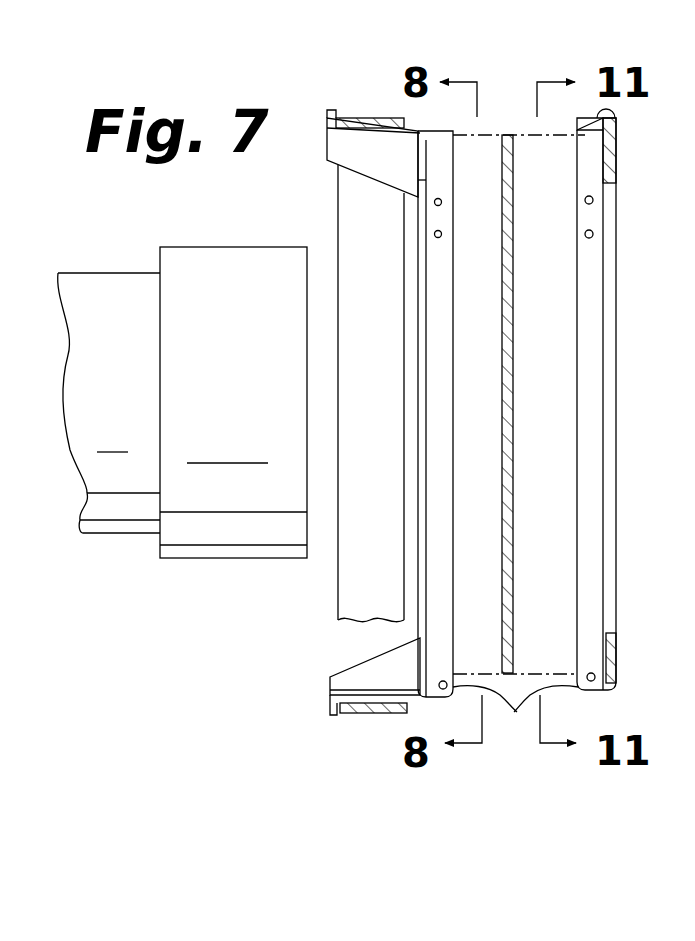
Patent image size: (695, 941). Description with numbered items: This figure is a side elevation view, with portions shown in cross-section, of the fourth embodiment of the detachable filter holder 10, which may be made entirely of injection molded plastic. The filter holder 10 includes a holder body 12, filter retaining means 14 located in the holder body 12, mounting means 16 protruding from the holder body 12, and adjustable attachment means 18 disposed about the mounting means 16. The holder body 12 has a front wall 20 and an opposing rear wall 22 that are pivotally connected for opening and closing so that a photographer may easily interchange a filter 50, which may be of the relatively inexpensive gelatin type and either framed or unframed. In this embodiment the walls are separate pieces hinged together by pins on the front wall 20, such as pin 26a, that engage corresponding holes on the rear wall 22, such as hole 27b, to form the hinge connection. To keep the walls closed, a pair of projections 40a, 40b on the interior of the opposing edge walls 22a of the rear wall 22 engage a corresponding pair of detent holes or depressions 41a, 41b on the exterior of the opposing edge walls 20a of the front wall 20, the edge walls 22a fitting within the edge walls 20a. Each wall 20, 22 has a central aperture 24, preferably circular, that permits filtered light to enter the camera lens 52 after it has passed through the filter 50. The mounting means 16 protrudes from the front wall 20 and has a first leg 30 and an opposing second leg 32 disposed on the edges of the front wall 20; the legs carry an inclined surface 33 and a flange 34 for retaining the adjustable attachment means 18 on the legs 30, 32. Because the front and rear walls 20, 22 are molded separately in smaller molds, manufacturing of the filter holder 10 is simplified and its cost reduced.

The detachable filter holder 10 is at (318, 788).
The holder body 12 is at (515, 712).
The filter retaining means 14 is at (570, 157).
The mounting means 16 is at (335, 375).
The adjustable attachment means 18 is at (356, 117).
The front wall 20 is at (456, 414).
The edge walls of front wall 20a is at (440, 300).
The rear wall 22 is at (595, 399).
The edge walls of rear wall 22a is at (592, 332).
The central aperture 24 is at (406, 713).
The pin 26a is at (447, 683).
The hole 27b is at (587, 677).
The first leg 30 is at (376, 157).
The second leg 32 is at (375, 666).
The lower surface 33 is at (415, 126).
The flange 34 is at (330, 113).
The projection 40a is at (576, 202).
The projection 40b is at (576, 235).
The detent hole 41a is at (442, 202).
The detent hole 41b is at (442, 234).
The filter 50 is at (513, 447).
The camera lens 52 is at (182, 402).